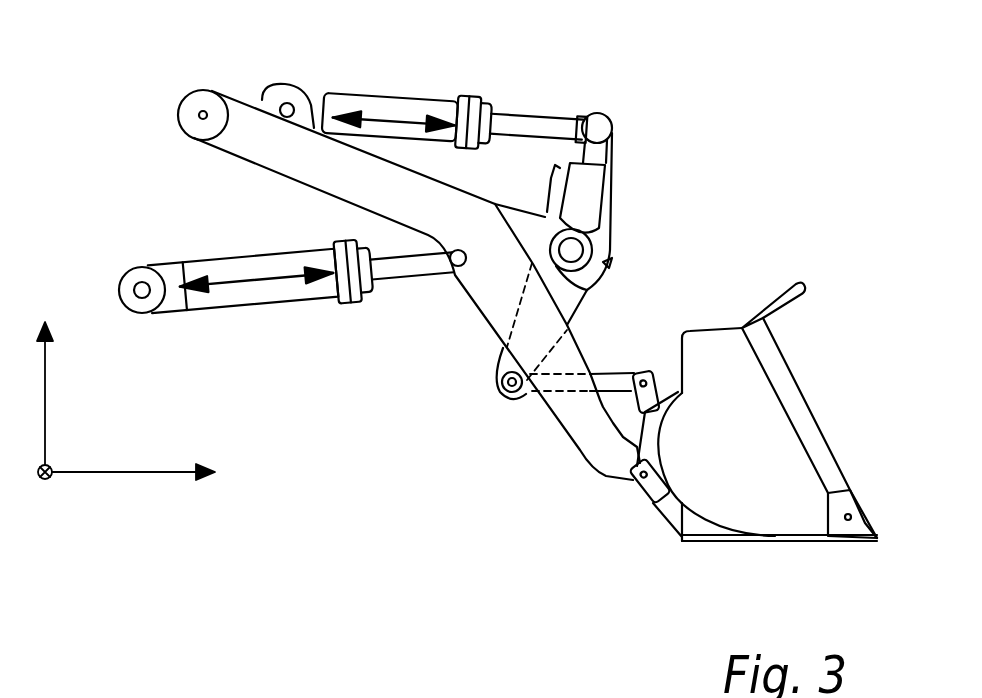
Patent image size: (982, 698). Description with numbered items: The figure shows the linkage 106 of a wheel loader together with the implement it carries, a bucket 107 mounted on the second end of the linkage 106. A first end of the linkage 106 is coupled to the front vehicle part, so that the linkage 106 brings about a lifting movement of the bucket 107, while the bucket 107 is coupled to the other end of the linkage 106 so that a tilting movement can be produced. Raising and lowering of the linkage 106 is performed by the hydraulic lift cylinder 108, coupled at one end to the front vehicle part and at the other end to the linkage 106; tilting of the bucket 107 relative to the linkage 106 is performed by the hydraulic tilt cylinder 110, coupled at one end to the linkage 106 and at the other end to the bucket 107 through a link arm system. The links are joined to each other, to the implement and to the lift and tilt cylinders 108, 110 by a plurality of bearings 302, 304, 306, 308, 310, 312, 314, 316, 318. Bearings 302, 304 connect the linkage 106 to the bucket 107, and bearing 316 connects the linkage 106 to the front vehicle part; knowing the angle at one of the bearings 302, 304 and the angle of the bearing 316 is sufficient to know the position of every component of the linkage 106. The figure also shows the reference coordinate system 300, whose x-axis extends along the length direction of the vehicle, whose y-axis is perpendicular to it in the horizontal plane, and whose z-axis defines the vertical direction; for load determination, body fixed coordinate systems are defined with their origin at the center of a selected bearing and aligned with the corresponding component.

The linkage 106 is at (562, 70).
The bucket 107 is at (769, 518).
The hydraulic lift cylinder 108 is at (290, 306).
The hydraulic tilt cylinder 110 is at (414, 92).
The reference coordinate system 300 is at (82, 473).
The bearing 302 is at (633, 480).
The bearing 304 is at (641, 373).
The bearing 306 is at (506, 393).
The bearing 308 is at (576, 254).
The bearing 310 is at (601, 130).
The bearing 312 is at (455, 268).
The bearing 314 is at (286, 106).
The bearing 316 is at (190, 103).
The bearing 318 is at (140, 288).